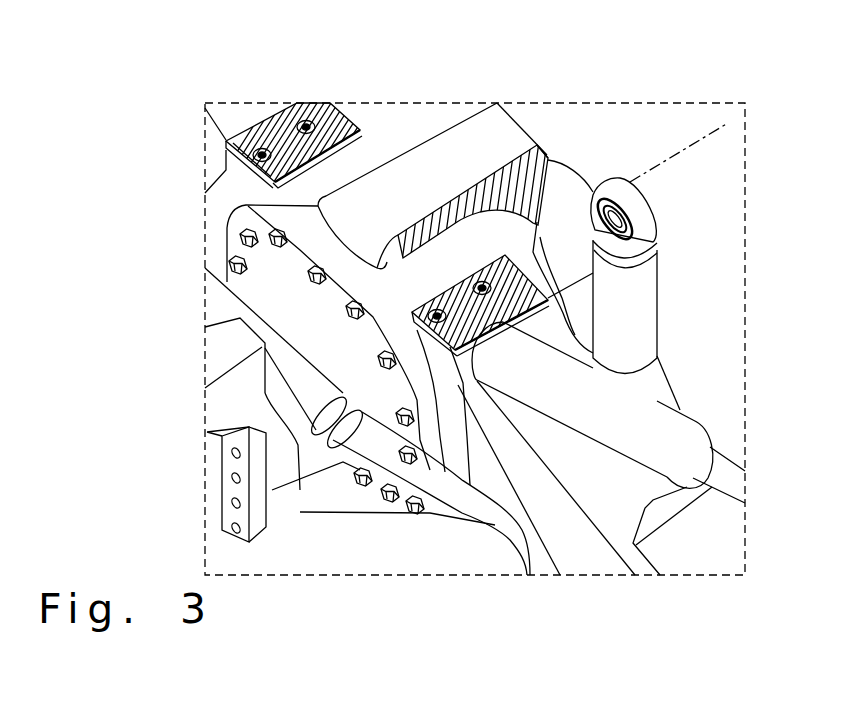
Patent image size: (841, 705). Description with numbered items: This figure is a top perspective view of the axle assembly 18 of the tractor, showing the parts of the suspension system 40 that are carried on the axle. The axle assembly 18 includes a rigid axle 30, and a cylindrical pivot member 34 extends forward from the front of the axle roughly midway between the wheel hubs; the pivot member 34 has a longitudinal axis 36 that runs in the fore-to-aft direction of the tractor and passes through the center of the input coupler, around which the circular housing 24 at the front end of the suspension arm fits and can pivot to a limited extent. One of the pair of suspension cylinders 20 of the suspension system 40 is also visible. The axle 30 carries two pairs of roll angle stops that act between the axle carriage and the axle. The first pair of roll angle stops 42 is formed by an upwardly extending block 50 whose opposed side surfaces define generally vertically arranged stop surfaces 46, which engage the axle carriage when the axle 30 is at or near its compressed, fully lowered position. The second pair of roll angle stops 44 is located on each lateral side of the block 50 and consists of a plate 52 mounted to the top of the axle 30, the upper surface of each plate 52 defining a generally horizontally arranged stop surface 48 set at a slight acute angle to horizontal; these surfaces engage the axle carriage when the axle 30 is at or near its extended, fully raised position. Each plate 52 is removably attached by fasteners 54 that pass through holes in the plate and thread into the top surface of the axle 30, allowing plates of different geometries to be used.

The axle assembly 18 is at (612, 588).
The suspension cylinders 20 is at (657, 303).
The circular housing 24 is at (272, 490).
The rigid axle 30 is at (617, 482).
The pivot member 34 is at (578, 190).
The longitudinal axis 36 is at (687, 150).
The suspension system 40 is at (376, 536).
The first pair of roll angle stops 42 is at (537, 138).
The second pair of roll angle stops 44 is at (290, 92).
The vertically arranged stop surface 46 is at (437, 133).
The horizontally arranged stop surface 48 is at (325, 103).
The upwardly extending block 50 is at (515, 152).
The plate 52 is at (228, 133).
The fasteners 54 is at (262, 156).